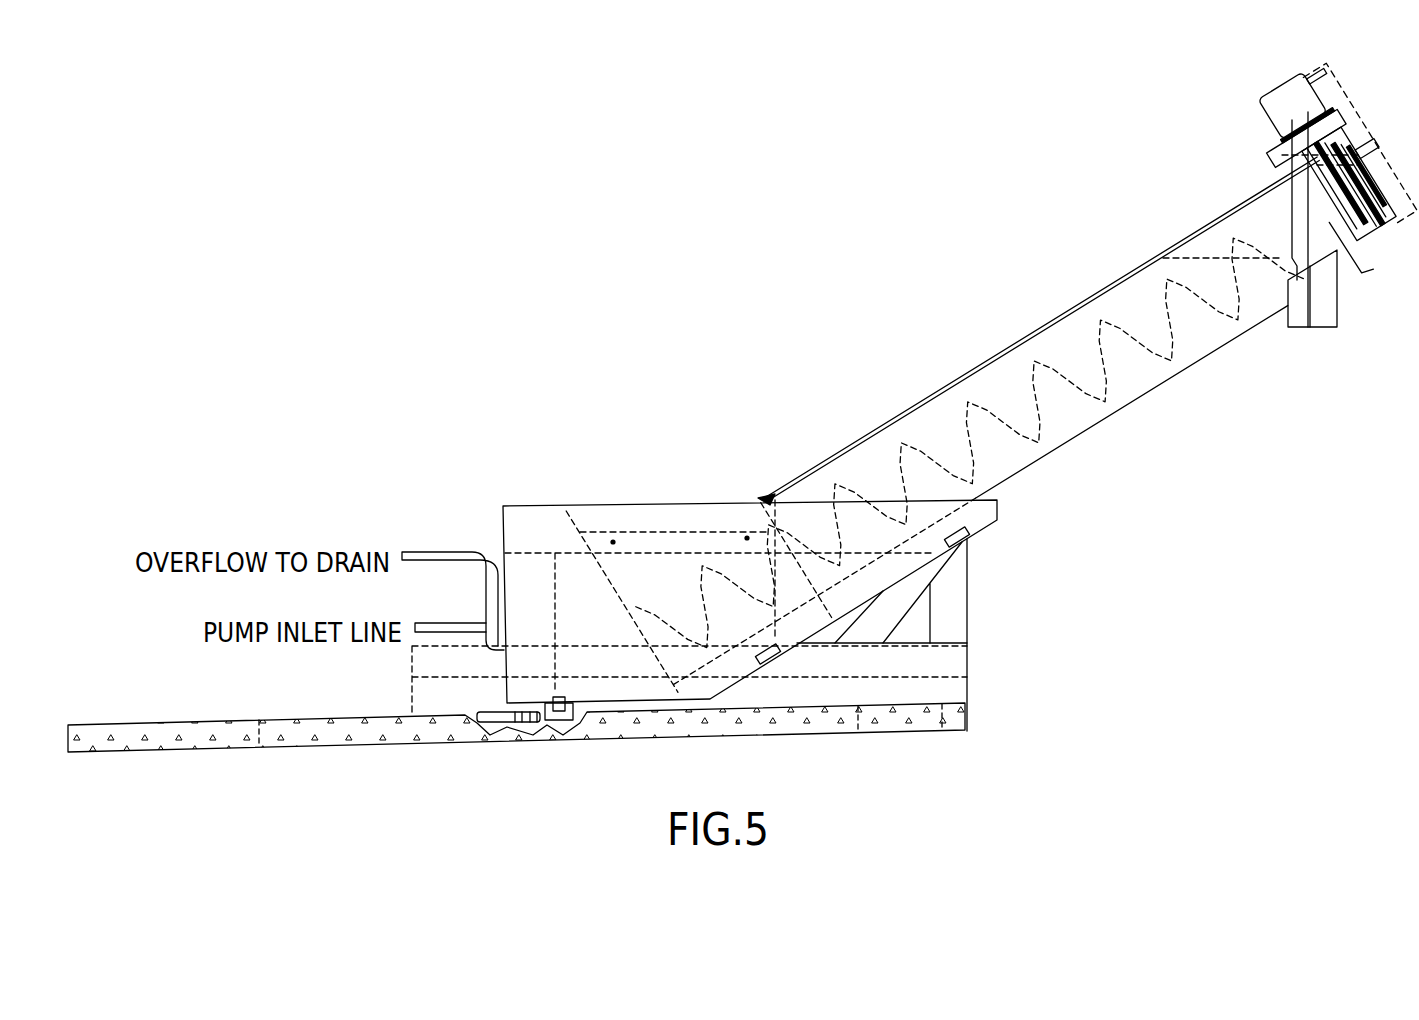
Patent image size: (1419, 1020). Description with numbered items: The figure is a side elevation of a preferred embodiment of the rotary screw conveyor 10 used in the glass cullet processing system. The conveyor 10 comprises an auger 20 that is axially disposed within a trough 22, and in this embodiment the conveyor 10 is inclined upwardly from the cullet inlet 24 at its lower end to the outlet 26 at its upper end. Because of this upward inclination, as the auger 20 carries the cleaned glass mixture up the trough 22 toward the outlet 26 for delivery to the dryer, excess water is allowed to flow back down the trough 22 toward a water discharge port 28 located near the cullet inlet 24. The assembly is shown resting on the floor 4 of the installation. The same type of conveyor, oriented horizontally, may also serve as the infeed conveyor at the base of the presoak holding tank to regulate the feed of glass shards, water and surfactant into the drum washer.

The floor 4 is at (343, 732).
The rotary screw conveyor 10 is at (910, 392).
The auger 20 is at (1105, 390).
The trough 22 is at (1077, 423).
The inlet 24 is at (616, 536).
The outlet 26 is at (1328, 299).
The water discharge port 28 is at (498, 718).